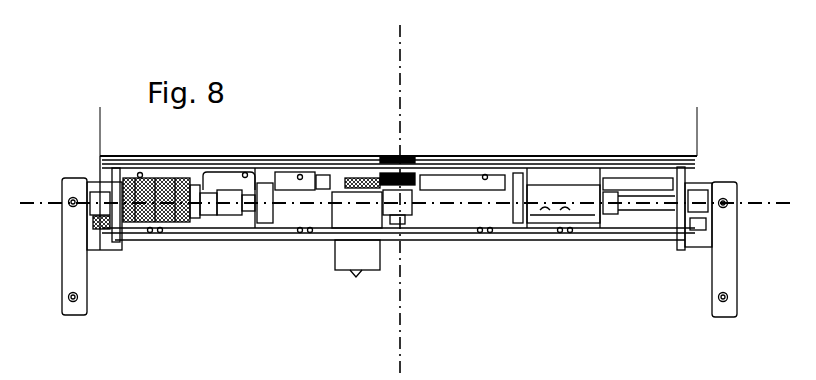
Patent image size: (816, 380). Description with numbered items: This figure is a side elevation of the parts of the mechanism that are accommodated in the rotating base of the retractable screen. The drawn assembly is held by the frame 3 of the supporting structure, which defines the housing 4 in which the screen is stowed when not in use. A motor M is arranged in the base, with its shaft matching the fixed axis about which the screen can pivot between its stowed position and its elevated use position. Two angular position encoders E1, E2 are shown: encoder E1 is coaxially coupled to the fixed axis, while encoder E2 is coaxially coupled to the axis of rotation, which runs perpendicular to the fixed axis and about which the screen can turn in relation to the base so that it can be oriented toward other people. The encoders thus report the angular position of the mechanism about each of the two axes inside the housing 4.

The motor M is at (155, 190).
The angular position encoder E1 is at (263, 213).
The angular position encoder E2 is at (393, 197).
The frame 3 is at (73, 252).
The housing 4 is at (463, 255).